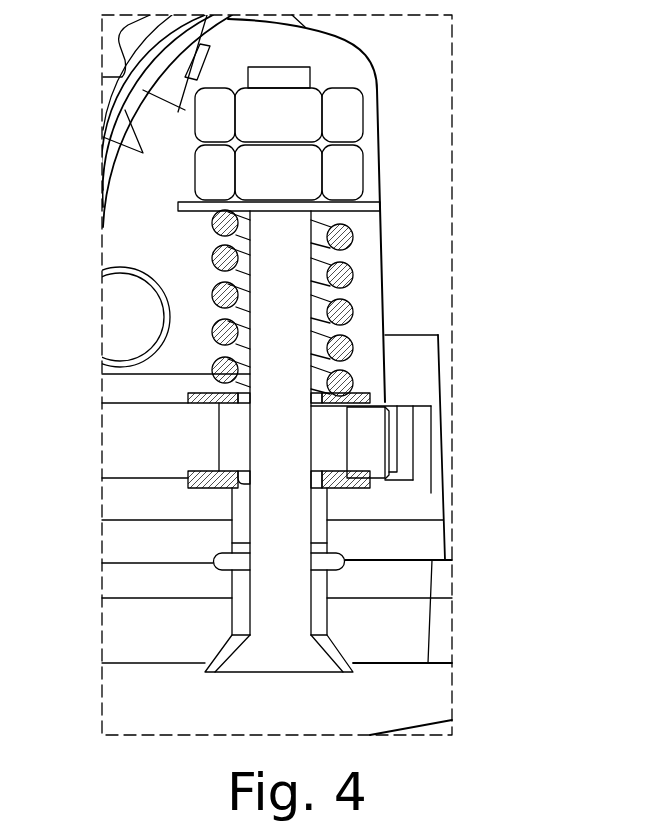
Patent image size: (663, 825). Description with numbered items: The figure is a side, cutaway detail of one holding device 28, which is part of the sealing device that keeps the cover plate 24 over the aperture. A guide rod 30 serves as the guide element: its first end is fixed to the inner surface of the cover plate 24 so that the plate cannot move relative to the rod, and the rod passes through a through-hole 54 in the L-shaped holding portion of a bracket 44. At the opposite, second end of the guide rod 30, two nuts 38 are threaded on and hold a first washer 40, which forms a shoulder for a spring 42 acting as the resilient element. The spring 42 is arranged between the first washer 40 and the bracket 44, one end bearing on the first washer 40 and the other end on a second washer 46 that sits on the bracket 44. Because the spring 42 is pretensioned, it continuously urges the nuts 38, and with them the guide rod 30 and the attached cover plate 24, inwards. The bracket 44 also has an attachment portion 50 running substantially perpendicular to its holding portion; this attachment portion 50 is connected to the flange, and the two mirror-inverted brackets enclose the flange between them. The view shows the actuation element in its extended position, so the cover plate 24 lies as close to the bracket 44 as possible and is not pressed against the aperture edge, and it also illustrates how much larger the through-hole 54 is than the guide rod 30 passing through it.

The cover plate 24 is at (397, 630).
The holding device 28 is at (536, 105).
The guide rod 30 is at (268, 442).
The nuts 38 is at (352, 116).
The first washer 40 is at (368, 204).
The spring 42 is at (338, 275).
The bracket 44 is at (427, 543).
The second washer 46 is at (360, 402).
The attachment portion 50 is at (118, 249).
The through-hole 54 is at (324, 595).